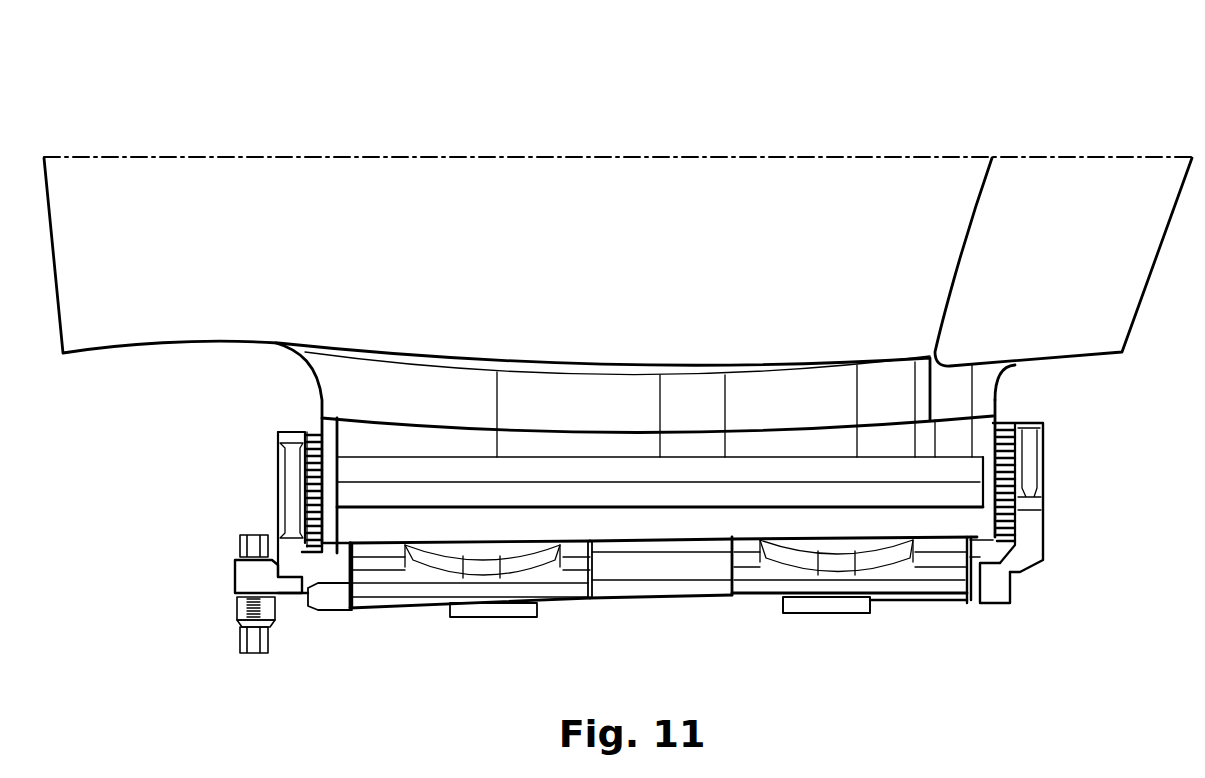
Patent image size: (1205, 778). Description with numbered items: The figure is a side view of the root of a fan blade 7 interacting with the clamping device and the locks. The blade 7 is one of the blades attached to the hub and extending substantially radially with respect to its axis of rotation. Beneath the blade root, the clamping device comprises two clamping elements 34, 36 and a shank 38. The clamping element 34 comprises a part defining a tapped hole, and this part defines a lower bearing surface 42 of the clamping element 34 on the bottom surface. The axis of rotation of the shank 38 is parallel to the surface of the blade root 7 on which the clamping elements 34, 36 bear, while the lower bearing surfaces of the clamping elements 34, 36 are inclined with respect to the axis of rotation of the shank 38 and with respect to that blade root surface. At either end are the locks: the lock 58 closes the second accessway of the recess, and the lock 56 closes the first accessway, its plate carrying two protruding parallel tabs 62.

The blade 7 is at (195, 180).
The clamping element 34 is at (935, 590).
The clamping element 36 is at (575, 578).
The shank 38 is at (670, 592).
The lower bearing surface 42 is at (880, 600).
The lock 56 is at (1040, 455).
The lock 58 is at (290, 456).
The tab 62 is at (1003, 585).